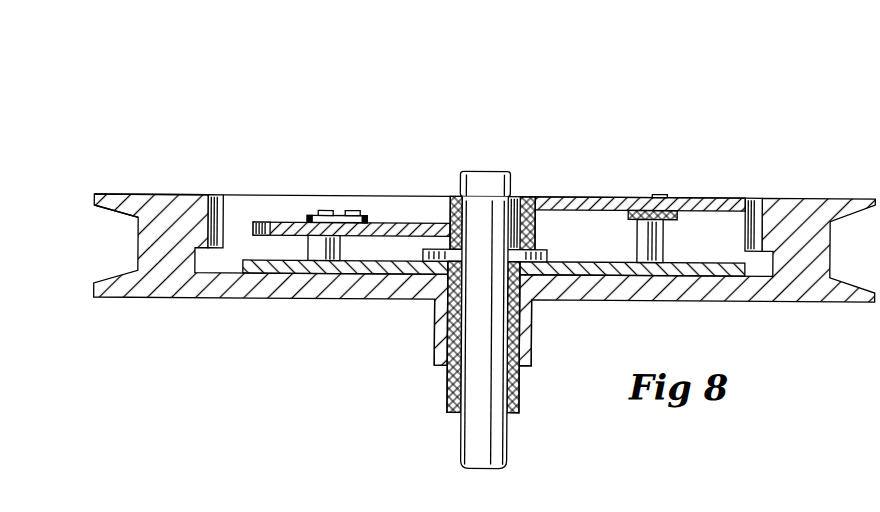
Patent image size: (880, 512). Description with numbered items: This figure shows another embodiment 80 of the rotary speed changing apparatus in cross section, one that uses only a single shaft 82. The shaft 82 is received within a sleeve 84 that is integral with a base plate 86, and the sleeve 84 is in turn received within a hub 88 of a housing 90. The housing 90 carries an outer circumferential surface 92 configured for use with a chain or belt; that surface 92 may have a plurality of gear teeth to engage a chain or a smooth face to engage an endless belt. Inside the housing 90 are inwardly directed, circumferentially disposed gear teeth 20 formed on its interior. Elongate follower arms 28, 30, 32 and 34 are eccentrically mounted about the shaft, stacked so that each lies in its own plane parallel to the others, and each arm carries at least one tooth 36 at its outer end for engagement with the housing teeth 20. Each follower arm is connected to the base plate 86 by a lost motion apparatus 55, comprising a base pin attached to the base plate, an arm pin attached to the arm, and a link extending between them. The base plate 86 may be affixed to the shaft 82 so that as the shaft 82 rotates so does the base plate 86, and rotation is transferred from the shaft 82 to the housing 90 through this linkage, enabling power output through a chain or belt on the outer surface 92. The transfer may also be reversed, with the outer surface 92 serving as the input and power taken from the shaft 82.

The embodiment 80 is at (110, 156).
The outer circumferential surface 92 is at (113, 212).
The housing 90 is at (144, 303).
The gear teeth 20 is at (215, 194).
The tooth 36 is at (262, 221).
The lost motion apparatus 55 is at (370, 210).
The follower arm 32 is at (413, 220).
The follower arm 28 is at (634, 188).
The follower arm 30 is at (538, 214).
The follower arm 34 is at (540, 244).
The base plate 86 is at (724, 260).
The hub 88 is at (433, 331).
The sleeve 84 is at (448, 403).
The shaft 82 is at (508, 437).